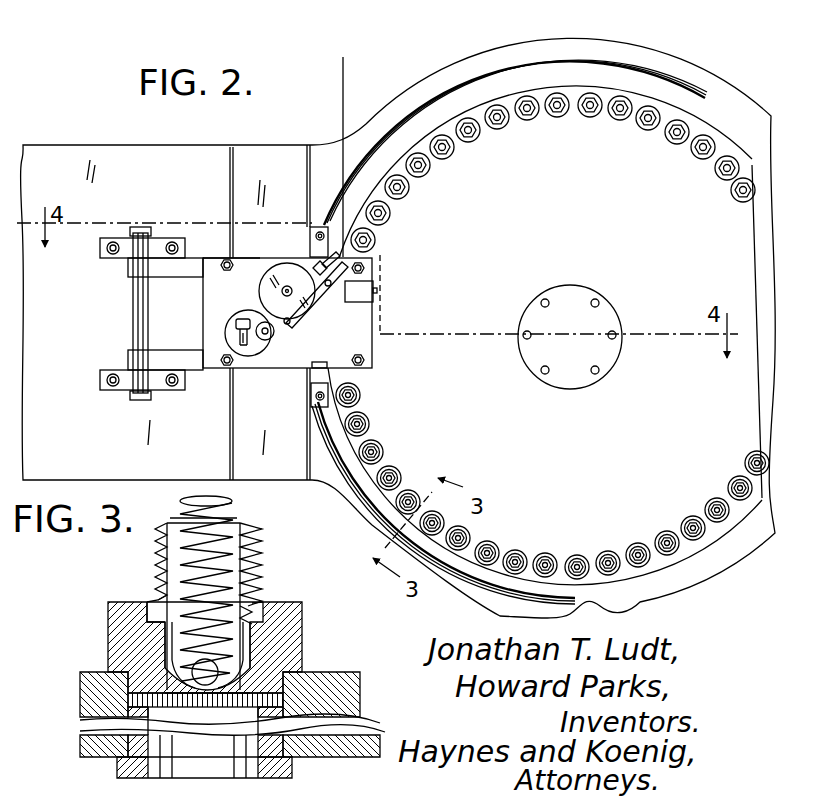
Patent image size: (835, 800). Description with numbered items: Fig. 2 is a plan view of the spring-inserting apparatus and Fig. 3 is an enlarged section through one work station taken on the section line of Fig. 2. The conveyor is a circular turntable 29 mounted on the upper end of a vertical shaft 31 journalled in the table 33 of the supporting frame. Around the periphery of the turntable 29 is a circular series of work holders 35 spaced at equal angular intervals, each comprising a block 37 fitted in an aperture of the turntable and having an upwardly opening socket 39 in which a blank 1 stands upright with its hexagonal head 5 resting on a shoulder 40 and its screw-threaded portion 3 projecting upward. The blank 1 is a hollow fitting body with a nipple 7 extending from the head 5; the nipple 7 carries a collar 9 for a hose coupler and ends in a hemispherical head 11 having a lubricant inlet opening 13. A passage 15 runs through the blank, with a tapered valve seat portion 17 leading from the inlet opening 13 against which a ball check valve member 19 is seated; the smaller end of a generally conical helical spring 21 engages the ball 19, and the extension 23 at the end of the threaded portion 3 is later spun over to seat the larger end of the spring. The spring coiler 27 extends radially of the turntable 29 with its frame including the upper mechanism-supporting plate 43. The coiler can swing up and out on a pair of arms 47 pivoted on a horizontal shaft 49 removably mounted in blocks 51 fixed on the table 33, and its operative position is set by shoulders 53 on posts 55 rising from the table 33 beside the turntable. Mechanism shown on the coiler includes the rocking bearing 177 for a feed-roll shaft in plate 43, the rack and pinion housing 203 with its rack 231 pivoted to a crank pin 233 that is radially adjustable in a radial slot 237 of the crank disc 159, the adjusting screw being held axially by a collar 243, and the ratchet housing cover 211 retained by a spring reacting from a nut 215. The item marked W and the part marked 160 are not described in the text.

In FIG. 2, the table 33 is at (150, 155).
In FIG. 2, the circular turntable 29 is at (585, 236).
In FIG. 3, the circular turntable 29 is at (90, 688).
In FIG. 2, the workpiece W is at (345, 168).
In FIG. 2, the vertical shaft 31 is at (545, 355).
In FIG. 2, the hollow body or blank 1 is at (427, 173).
In FIG. 3, the hollow body or blank 1 is at (264, 584).
In FIG. 2, the work holders 35 is at (470, 147).
In FIG. 3, the work holders 35 is at (306, 610).
In FIG. 2, the block 37 is at (647, 128).
In FIG. 3, the block 37 is at (293, 642).
In FIG. 2, the conical and helical spring 21 is at (390, 467).
In FIG. 3, the conical and helical spring 21 is at (233, 507).
In FIG. 2, the mechanism-supporting plate 43 is at (368, 338).
In FIG. 2, the spring coiler 27 is at (220, 256).
In FIG. 2, the blocks 51 is at (100, 247).
In FIG. 2, the arms 47 is at (128, 268).
In FIG. 2, the horizontal shaft 49 is at (138, 308).
In FIG. 2, the posts 55 is at (312, 247).
In FIG. 2, the shoulders 53 is at (303, 257).
In FIG. 2, the cover 211 is at (273, 272).
In FIG. 2, the nut 215 is at (283, 290).
In FIG. 2, the rack and pinion housing 203 is at (318, 289).
In FIG. 2, the pivot 160 is at (293, 321).
In FIG. 2, the rocking bearing 177 is at (358, 298).
In FIG. 2, the radial slot 237 is at (242, 321).
In FIG. 2, the collar 243 is at (236, 330).
In FIG. 2, the crank disc 159 is at (238, 335).
In FIG. 2, the crank pin 233 is at (270, 343).
In FIG. 2, the rack 231 is at (272, 333).
In FIG. 3, the screw-threaded portion 3 is at (153, 561).
In FIG. 3, the passage 15 is at (248, 550).
In FIG. 3, the extension 23 is at (167, 533).
In FIG. 3, the hexagonal head 5 is at (150, 599).
In FIG. 3, the tapered valve seat portion 17 is at (180, 672).
In FIG. 3, the ball check valve member 19 is at (187, 684).
In FIG. 3, the shoulder 40 is at (160, 627).
In FIG. 3, the socket 39 is at (163, 643).
In FIG. 3, the nipple 7 is at (232, 636).
In FIG. 3, the collar 9 is at (240, 664).
In FIG. 3, the hemispherical head 11 is at (240, 684).
In FIG. 3, the lubricant inlet opening 13 is at (212, 714).